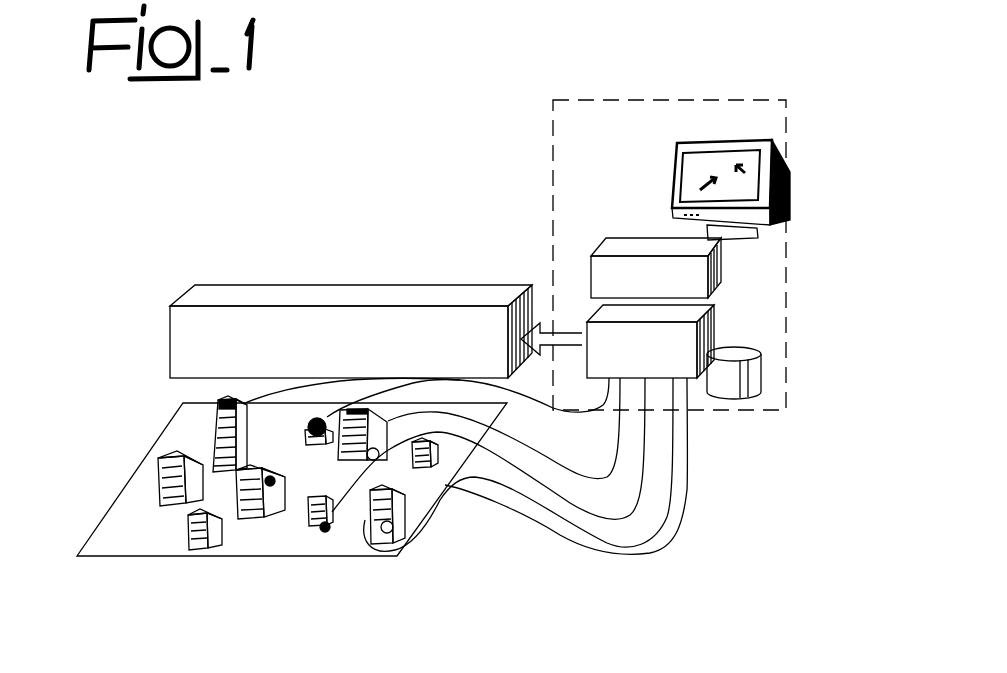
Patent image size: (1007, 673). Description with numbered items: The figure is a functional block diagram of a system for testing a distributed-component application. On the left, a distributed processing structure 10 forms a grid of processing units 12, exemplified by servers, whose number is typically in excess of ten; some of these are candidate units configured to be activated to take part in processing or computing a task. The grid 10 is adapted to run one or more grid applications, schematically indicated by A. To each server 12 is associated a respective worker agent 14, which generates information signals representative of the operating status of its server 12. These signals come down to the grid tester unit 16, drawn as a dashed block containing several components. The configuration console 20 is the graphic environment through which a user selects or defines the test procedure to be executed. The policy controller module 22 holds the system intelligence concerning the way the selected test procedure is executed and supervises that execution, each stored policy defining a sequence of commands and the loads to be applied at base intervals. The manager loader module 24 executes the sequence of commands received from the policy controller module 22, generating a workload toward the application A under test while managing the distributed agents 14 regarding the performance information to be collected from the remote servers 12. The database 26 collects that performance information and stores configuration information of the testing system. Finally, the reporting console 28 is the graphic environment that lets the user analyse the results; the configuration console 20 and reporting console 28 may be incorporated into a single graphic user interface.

The grid application A is at (348, 296).
The distributed processing structure 10 is at (103, 490).
The processing units 12 is at (172, 460).
The agent 14 is at (215, 415).
The grid tester unit 16 is at (593, 115).
The configuration console 20 is at (736, 172).
The reporting console 28 is at (720, 176).
The policy controller module 22 is at (722, 268).
The manager loader module 24 is at (716, 325).
The database 26 is at (761, 384).